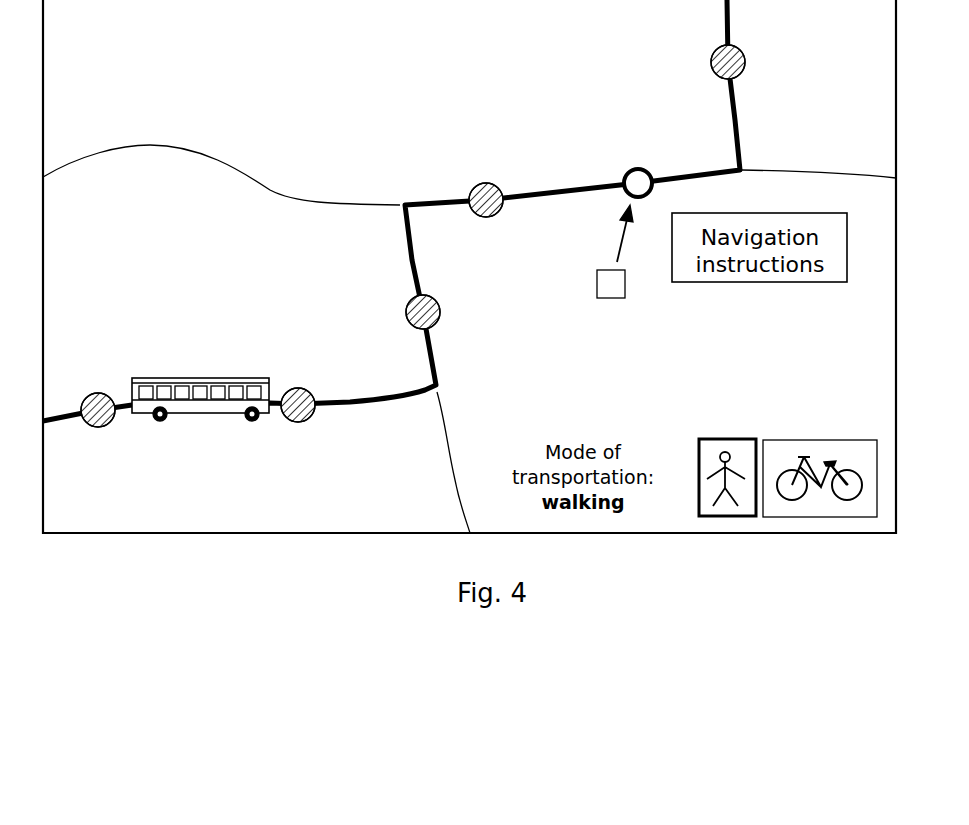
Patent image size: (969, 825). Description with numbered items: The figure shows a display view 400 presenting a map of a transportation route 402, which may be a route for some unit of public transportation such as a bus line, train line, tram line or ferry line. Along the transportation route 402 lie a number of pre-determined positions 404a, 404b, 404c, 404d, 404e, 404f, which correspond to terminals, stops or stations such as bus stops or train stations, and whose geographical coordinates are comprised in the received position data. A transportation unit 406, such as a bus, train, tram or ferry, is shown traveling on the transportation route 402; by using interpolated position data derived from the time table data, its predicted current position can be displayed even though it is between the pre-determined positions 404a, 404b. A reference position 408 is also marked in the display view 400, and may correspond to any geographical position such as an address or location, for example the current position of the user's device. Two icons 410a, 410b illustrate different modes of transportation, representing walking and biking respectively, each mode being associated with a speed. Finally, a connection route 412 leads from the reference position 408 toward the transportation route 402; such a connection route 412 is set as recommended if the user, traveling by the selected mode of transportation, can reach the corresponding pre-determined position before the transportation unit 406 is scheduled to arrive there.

The display view 400 is at (283, 575).
The transportation route 402 is at (361, 405).
The pre-determined position 404a is at (100, 395).
The pre-determined position 404b is at (302, 392).
The pre-determined position 404c is at (427, 313).
The pre-determined position 404d is at (491, 190).
The pre-determined position 404e is at (638, 183).
The pre-determined position 404f is at (735, 58).
The transportation unit 406 is at (197, 410).
The reference position 408 is at (612, 283).
The transportation mode icon 410a is at (744, 456).
The transportation mode icon 410b is at (856, 457).
The connection route 412 is at (606, 243).